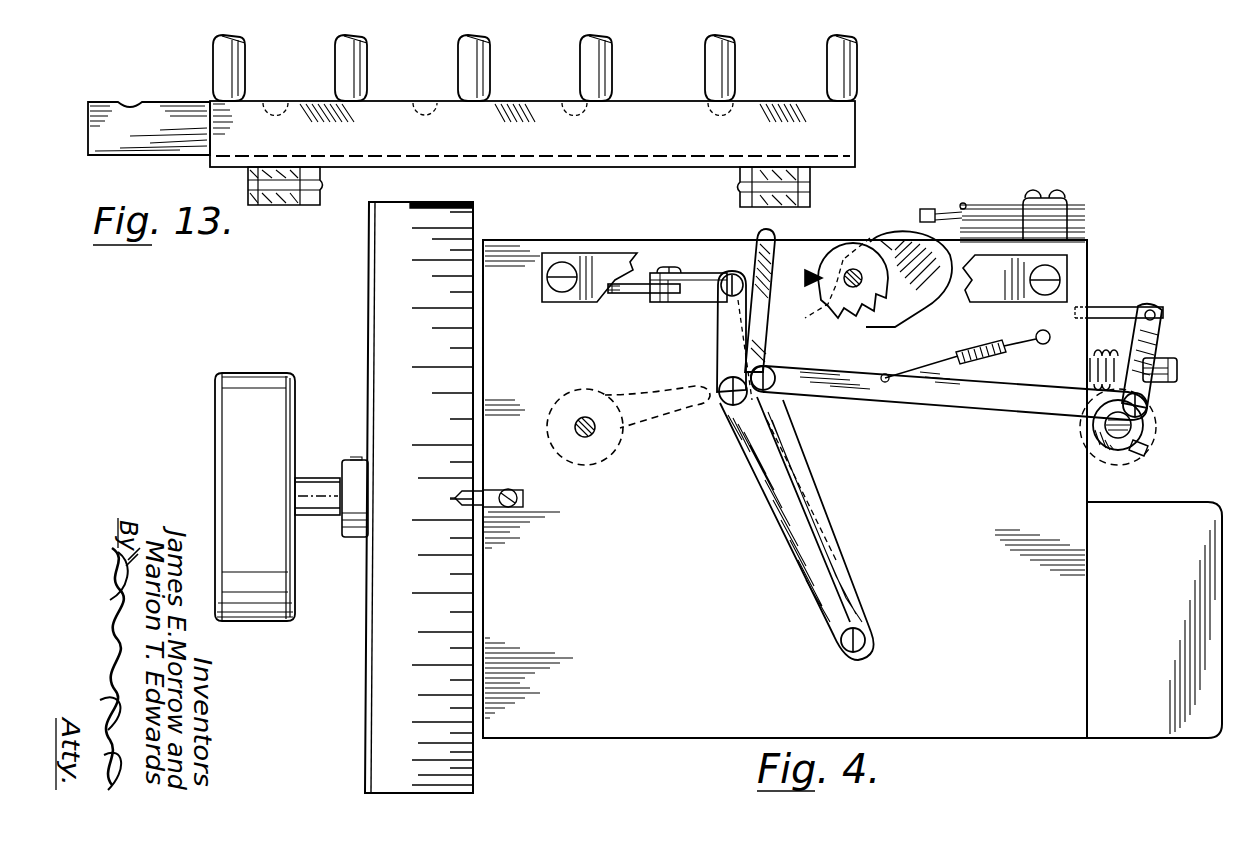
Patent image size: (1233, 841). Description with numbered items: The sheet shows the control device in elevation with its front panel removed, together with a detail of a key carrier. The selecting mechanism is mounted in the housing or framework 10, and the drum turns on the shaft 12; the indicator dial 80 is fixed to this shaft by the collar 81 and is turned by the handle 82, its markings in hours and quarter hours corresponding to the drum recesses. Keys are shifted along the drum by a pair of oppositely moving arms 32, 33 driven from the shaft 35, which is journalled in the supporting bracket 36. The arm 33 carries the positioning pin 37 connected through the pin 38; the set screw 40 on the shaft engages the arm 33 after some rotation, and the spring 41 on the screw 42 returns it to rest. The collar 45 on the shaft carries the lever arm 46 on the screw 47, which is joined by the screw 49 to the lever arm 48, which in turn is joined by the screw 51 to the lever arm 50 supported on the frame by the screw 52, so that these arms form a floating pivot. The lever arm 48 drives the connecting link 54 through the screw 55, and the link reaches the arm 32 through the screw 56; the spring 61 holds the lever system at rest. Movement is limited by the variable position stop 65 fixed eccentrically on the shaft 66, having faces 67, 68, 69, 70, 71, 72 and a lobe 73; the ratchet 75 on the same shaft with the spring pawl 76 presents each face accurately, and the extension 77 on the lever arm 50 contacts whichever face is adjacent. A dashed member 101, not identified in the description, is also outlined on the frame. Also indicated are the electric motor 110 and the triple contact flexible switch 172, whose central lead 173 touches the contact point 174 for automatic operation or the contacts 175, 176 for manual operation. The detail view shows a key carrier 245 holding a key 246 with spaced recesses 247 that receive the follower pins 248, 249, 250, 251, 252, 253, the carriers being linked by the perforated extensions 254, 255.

In FIG. 4, the housing or framework 10 is at (970, 738).
In FIG. 4, the shaft 12 is at (318, 515).
In FIG. 4, the arm 32 is at (627, 293).
In FIG. 4, the arm 33 is at (1156, 336).
In FIG. 4, the shaft 35 is at (1140, 432).
In FIG. 4, the supporting bracket 36 is at (1118, 458).
In FIG. 4, the positioning pin 37 is at (1118, 306).
In FIG. 4, the pin 38 is at (1155, 311).
In FIG. 4, the set screw 40 is at (1150, 450).
In FIG. 4, the spring 41 is at (1104, 356).
In FIG. 4, the screw 42 is at (1178, 366).
In FIG. 4, the collar 45 is at (1132, 424).
In FIG. 4, the lever arm 46 is at (940, 402).
In FIG. 4, the screw 47 is at (1148, 404).
In FIG. 4, the lever arm 48 is at (802, 440).
In FIG. 4, the screw 49 is at (777, 373).
In FIG. 4, the lever arm 50 is at (750, 450).
In FIG. 4, the screw 51 is at (866, 642).
In FIG. 4, the screw 52 is at (720, 383).
In FIG. 4, the connecting link 54 is at (694, 302).
In FIG. 4, the screw 55 is at (724, 272).
In FIG. 4, the screw 56 is at (671, 267).
In FIG. 4, the spring 61 is at (978, 346).
In FIG. 4, the variable position stop 65 is at (886, 238).
In FIG. 4, the shaft 66 is at (862, 280).
In FIG. 4, the face 67 is at (820, 307).
In FIG. 4, the face 68 is at (838, 313).
In FIG. 4, the face 69 is at (856, 318).
In FIG. 4, the face 70 is at (876, 327).
In FIG. 4, the face 71 is at (912, 316).
In FIG. 4, the face 72 is at (952, 282).
In FIG. 4, the lobe 73 is at (963, 246).
In FIG. 4, the ratchet 75 is at (884, 244).
In FIG. 4, the spring pawl 76 is at (808, 276).
In FIG. 4, the extension 77 is at (766, 310).
In FIG. 4, the indicator dial 80 is at (371, 316).
In FIG. 4, the collar 81 is at (345, 460).
In FIG. 4, the handle 82 is at (215, 424).
In FIG. 4, the cam 101 is at (610, 466).
In FIG. 4, the electric motor 110 is at (1148, 738).
In FIG. 4, the triple contact flexible switch 172 is at (1048, 196).
In FIG. 4, the central lead 173 is at (926, 209).
In FIG. 4, the contact point 174 is at (963, 240).
In FIG. 4, the contact 175 is at (962, 203).
In FIG. 4, the contact 176 is at (1000, 204).
In FIG. 13, the key carrier 245 is at (218, 150).
In FIG. 13, the key 246 is at (90, 102).
In FIG. 13, the recess 247 is at (135, 101).
In FIG. 13, the follower pin 248 is at (247, 62).
In FIG. 13, the follower pin 249 is at (369, 62).
In FIG. 13, the follower pin 250 is at (492, 62).
In FIG. 13, the follower pin 251 is at (614, 62).
In FIG. 13, the follower pin 252 is at (737, 65).
In FIG. 13, the follower pin 253 is at (859, 65).
In FIG. 13, the extension 254 is at (286, 205).
In FIG. 13, the extension 255 is at (750, 207).